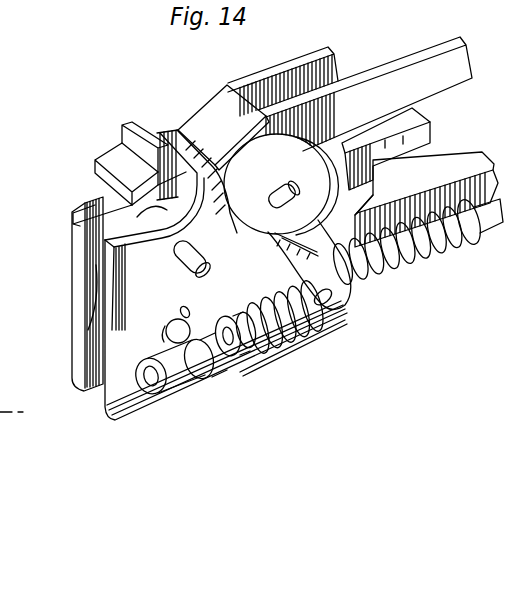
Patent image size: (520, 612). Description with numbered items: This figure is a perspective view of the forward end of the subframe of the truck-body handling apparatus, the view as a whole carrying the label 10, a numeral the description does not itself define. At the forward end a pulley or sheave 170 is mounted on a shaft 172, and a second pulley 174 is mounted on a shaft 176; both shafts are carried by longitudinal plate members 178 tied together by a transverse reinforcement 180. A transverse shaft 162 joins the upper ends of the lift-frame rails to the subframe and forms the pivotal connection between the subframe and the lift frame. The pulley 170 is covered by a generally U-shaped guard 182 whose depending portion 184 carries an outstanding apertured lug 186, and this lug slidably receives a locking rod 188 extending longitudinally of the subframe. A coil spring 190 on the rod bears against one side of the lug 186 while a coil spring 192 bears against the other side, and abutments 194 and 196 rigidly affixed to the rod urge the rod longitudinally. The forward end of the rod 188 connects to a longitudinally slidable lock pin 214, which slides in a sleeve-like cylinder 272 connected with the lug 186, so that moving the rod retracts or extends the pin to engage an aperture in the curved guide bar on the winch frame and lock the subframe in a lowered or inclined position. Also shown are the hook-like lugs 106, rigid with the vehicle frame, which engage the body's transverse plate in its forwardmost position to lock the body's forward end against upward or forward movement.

The wire cutting device 10 is at (64, 17).
The hook-like lugs 106 is at (342, 62).
The transverse shaft 162 is at (207, 260).
The pulley 170 is at (192, 155).
The shaft 172 is at (268, 187).
The pulley 174 is at (93, 305).
The shaft 176 is at (165, 322).
The longitudinal plate members 178 is at (80, 213).
The transverse reinforcement 180 is at (123, 133).
The U-shaped guard 182 is at (210, 110).
The depending portion 184 is at (290, 252).
The apertured lug 186 is at (350, 303).
The locking rod 188 is at (488, 225).
The coil spring 190 is at (295, 340).
The coil spring 192 is at (437, 260).
The abutment 194 is at (257, 353).
The abutment 196 is at (477, 245).
The lock pin 214 is at (157, 393).
The sleeve-like cylinder 272 is at (325, 332).